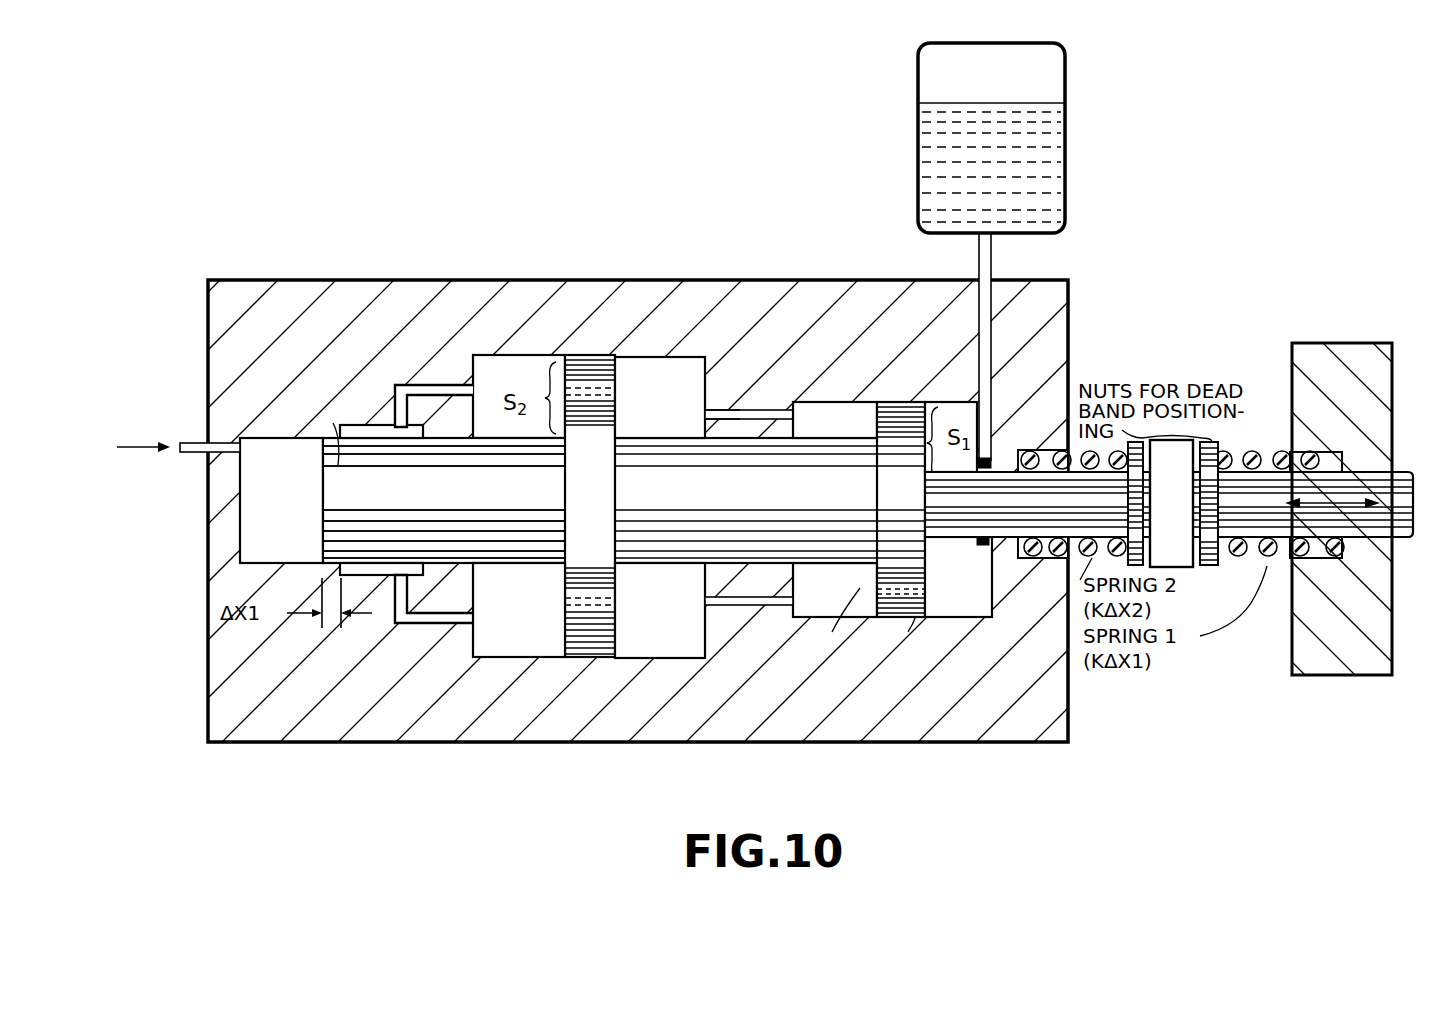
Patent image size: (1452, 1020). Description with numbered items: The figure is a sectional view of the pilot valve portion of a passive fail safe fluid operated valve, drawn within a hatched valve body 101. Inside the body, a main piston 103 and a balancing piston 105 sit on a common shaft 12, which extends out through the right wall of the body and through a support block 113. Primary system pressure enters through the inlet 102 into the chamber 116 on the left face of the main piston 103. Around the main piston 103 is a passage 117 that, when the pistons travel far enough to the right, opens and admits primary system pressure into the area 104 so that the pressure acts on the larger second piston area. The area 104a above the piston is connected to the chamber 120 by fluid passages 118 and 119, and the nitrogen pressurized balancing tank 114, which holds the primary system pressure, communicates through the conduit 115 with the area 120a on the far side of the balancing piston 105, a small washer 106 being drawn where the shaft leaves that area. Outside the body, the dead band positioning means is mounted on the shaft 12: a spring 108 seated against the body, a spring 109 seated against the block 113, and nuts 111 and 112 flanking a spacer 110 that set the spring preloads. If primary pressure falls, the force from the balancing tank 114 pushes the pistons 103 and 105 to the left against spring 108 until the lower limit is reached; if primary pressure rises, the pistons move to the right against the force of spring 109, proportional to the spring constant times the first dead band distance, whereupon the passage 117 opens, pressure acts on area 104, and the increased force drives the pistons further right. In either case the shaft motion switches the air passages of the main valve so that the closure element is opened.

The housing 101 is at (574, 290).
The inlet 102 is at (199, 452).
The main piston 103 is at (330, 520).
The area 104 is at (543, 598).
The area 104a is at (690, 383).
The balancing piston 105 is at (878, 420).
The washer 106 is at (978, 538).
The spring 108 is at (1045, 452).
The spring 109 is at (1277, 454).
The spacer 110 is at (1182, 552).
The nut 111 is at (1135, 500).
The nut 112 is at (1218, 500).
The support block 113 is at (1323, 343).
The nitrogen pressurized balancing tank 114 is at (1058, 188).
The conduit 115 is at (991, 268).
The chamber 116 is at (296, 481).
The passage 117 is at (478, 385).
The fluid passage 118 is at (705, 414).
The fluid passage 119 is at (705, 603).
The chamber 120 is at (801, 412).
The area 120a is at (986, 596).
The output shaft 12 is at (1400, 478).